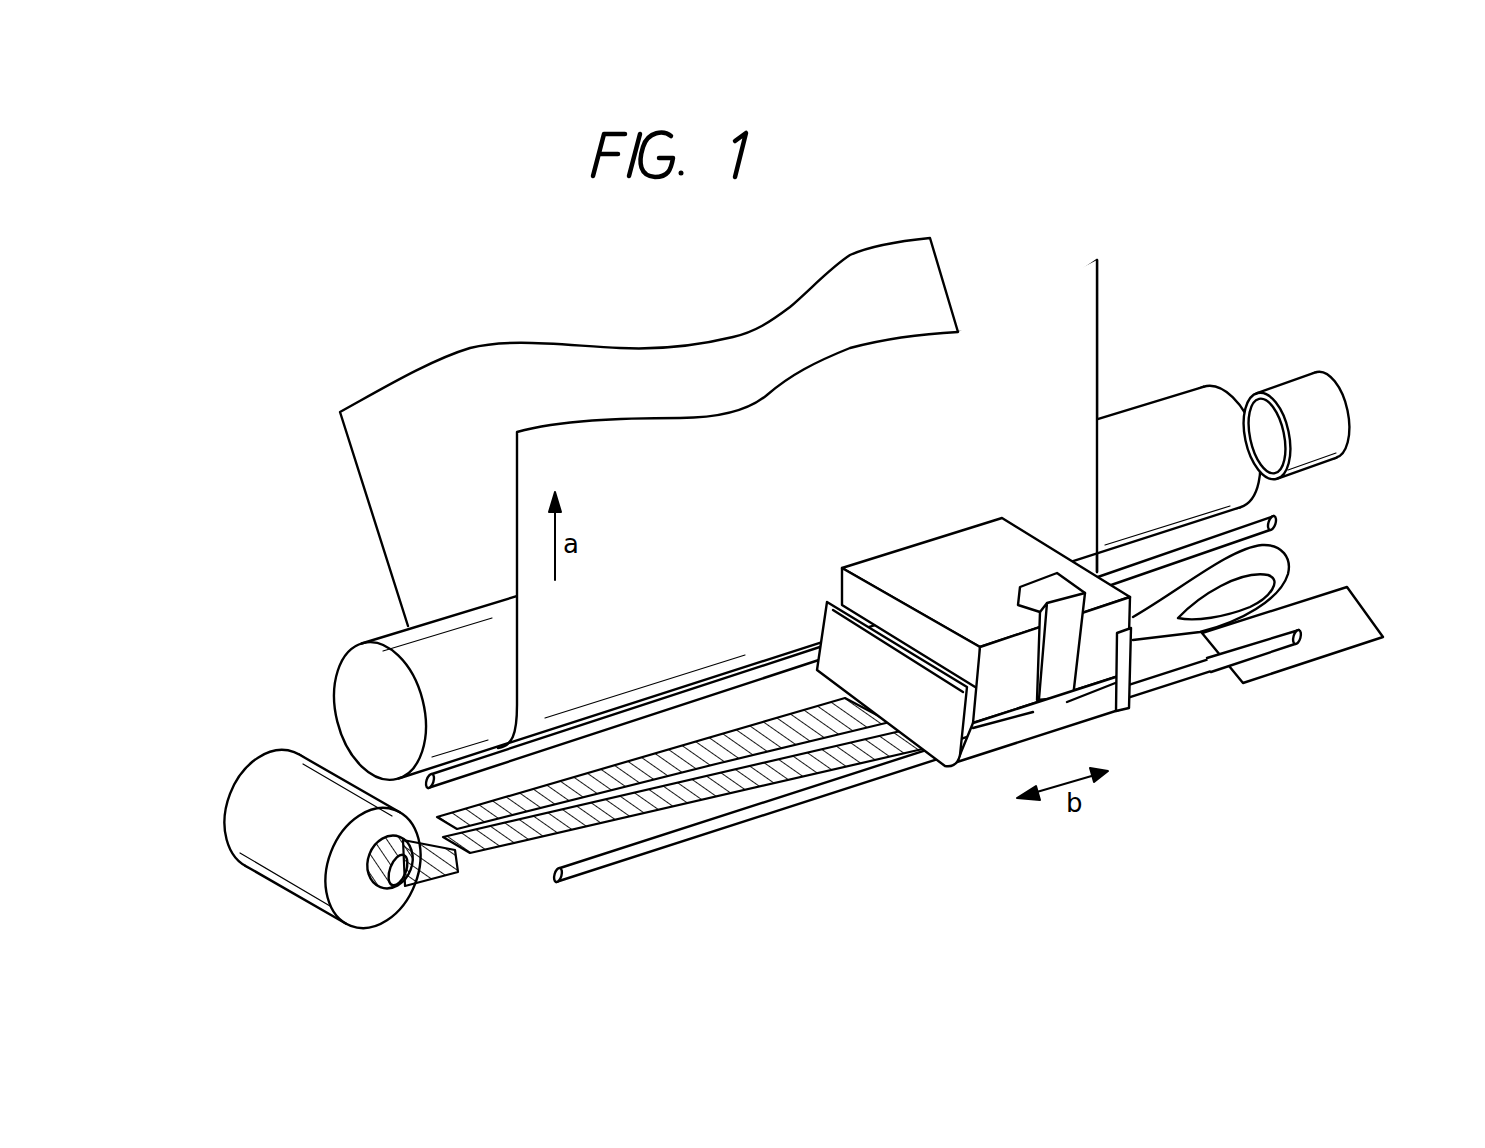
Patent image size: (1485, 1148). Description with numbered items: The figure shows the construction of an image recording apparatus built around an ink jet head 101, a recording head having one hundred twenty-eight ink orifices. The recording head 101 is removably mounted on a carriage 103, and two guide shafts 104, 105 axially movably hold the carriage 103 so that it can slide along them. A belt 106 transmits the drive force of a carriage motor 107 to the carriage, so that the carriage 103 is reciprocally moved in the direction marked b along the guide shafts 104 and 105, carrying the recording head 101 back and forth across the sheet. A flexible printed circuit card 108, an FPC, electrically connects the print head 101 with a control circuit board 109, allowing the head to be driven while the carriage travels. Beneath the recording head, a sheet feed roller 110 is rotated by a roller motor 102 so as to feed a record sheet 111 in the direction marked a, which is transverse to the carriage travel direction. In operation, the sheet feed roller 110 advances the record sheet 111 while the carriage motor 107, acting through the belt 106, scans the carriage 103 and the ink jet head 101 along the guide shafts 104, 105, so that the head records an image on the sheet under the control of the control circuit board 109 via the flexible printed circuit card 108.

The ink jet head 101 is at (845, 582).
The roller motor 102 is at (1338, 385).
The carriage 103 is at (924, 642).
The guide shaft 104 is at (1278, 518).
The guide shaft 105 is at (1267, 647).
The belt 106 is at (500, 852).
The carriage motor 107 is at (263, 770).
The flexible printed circuit card 108 is at (1283, 562).
The control circuit board 109 is at (1357, 608).
The sheet feed roller 110 is at (1207, 386).
The record sheet 111 is at (1088, 336).